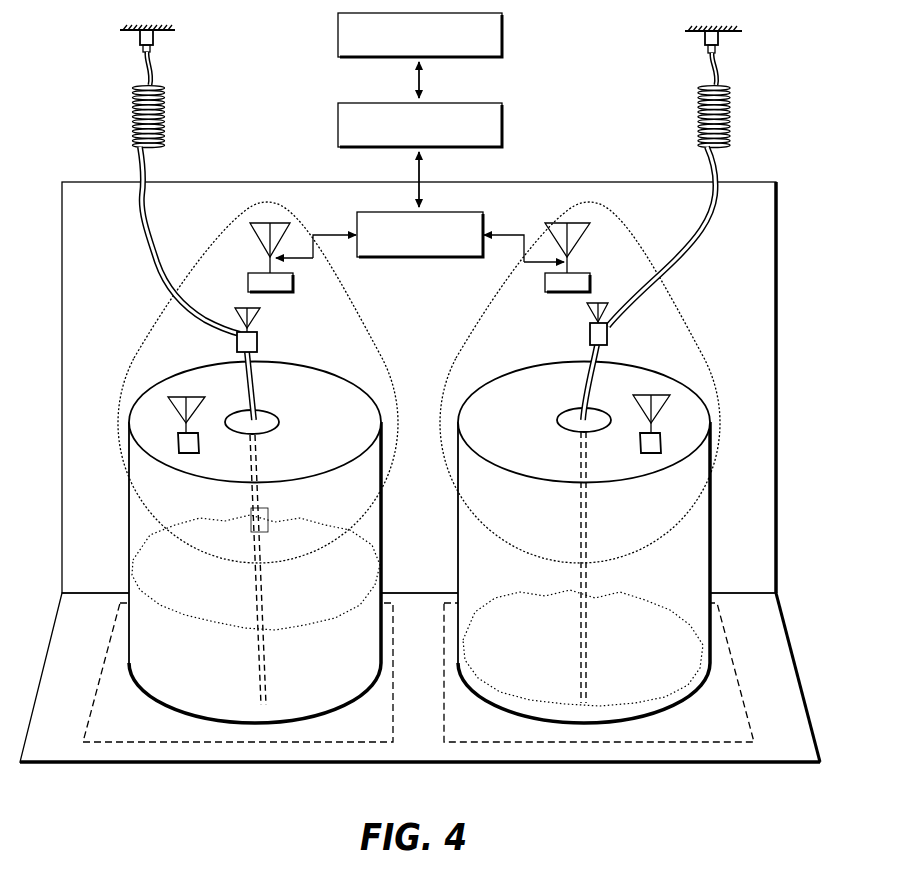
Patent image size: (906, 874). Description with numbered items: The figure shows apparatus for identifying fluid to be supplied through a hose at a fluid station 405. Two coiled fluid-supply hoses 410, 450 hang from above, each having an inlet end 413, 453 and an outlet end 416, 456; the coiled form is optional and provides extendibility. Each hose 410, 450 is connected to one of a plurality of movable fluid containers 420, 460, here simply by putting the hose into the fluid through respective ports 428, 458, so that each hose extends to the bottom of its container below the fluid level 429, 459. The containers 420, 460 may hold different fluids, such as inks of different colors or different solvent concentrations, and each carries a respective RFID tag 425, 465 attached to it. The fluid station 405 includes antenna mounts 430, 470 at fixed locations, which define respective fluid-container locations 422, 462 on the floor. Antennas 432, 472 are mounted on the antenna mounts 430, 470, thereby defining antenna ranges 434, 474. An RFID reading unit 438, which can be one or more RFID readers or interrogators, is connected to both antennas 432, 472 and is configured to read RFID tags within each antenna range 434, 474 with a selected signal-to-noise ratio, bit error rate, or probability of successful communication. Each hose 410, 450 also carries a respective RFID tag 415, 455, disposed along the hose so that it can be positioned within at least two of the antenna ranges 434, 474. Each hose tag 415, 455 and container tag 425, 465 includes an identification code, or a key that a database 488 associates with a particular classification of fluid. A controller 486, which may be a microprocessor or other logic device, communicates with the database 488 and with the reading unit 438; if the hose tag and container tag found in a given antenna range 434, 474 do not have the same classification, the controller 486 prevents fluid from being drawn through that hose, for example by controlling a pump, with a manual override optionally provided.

The fluid station 405 is at (178, 765).
The fluid-supply hose 410 is at (132, 110).
The inlet end 413 is at (262, 705).
The RFID tag 415 is at (259, 340).
The outlet end 416 is at (132, 44).
The movable fluid container 420 is at (128, 545).
The fluid-container location 422 is at (104, 660).
The RFID tag 425 is at (180, 444).
The port 428 is at (281, 421).
The fluid level 429 is at (256, 588).
The antenna mount 430 is at (249, 283).
The antenna 432 is at (261, 240).
The antenna range 434 is at (146, 342).
The RFID reading unit 438 is at (420, 258).
The fluid-supply hose 450 is at (698, 110).
The inlet end 453 is at (589, 704).
The RFID tag 455 is at (590, 336).
The outlet end 456 is at (697, 44).
The port 458 is at (557, 420).
The fluid level 459 is at (531, 685).
The movable fluid container 460 is at (712, 545).
The fluid-container location 462 is at (733, 660).
The RFID tag 465 is at (661, 444).
The antenna mount 470 is at (545, 283).
The antenna 472 is at (584, 248).
The antenna range 474 is at (693, 342).
The controller 486 is at (338, 125).
The database 488 is at (338, 32).